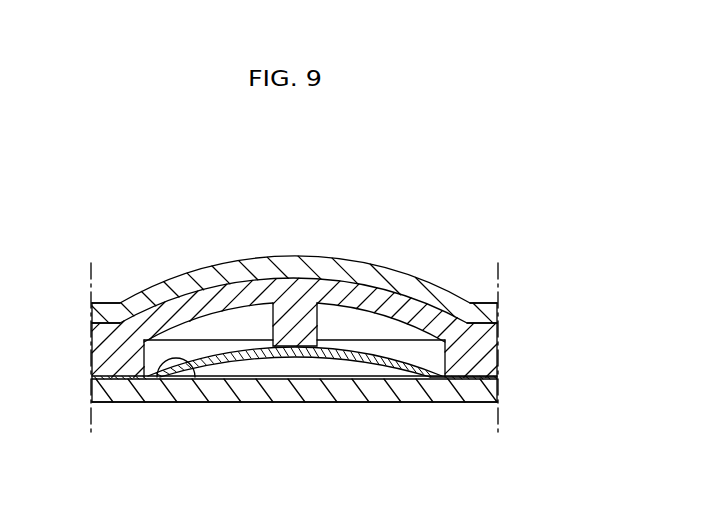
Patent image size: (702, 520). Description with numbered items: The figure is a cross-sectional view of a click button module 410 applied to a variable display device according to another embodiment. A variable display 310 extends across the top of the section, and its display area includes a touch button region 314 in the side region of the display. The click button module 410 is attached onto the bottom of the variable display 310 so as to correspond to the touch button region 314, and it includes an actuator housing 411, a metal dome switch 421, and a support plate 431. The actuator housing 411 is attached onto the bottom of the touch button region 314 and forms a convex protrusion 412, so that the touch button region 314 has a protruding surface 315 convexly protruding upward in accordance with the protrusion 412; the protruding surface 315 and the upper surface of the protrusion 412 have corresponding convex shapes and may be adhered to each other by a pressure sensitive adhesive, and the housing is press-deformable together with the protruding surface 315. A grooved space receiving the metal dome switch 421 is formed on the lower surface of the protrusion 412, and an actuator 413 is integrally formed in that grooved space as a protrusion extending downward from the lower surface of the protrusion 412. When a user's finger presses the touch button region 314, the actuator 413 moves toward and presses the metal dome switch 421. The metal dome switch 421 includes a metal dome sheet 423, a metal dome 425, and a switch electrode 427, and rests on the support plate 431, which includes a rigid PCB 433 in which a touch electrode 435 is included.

The variable display 310 is at (97, 315).
The touch button region 314 is at (275, 245).
The protruding surface 315 is at (303, 256).
The click button module 410 is at (515, 347).
The actuator housing 411 is at (97, 351).
The protrusion 412 is at (227, 297).
The actuator 413 is at (318, 322).
The metal dome switch 421 is at (107, 462).
The metal dome sheet 423 is at (122, 388).
The metal dome 425 is at (162, 384).
The switch electrode 427 is at (190, 387).
The support plate 431 is at (302, 457).
The rigid PCB 433 is at (368, 396).
The touch electrode 435 is at (315, 382).